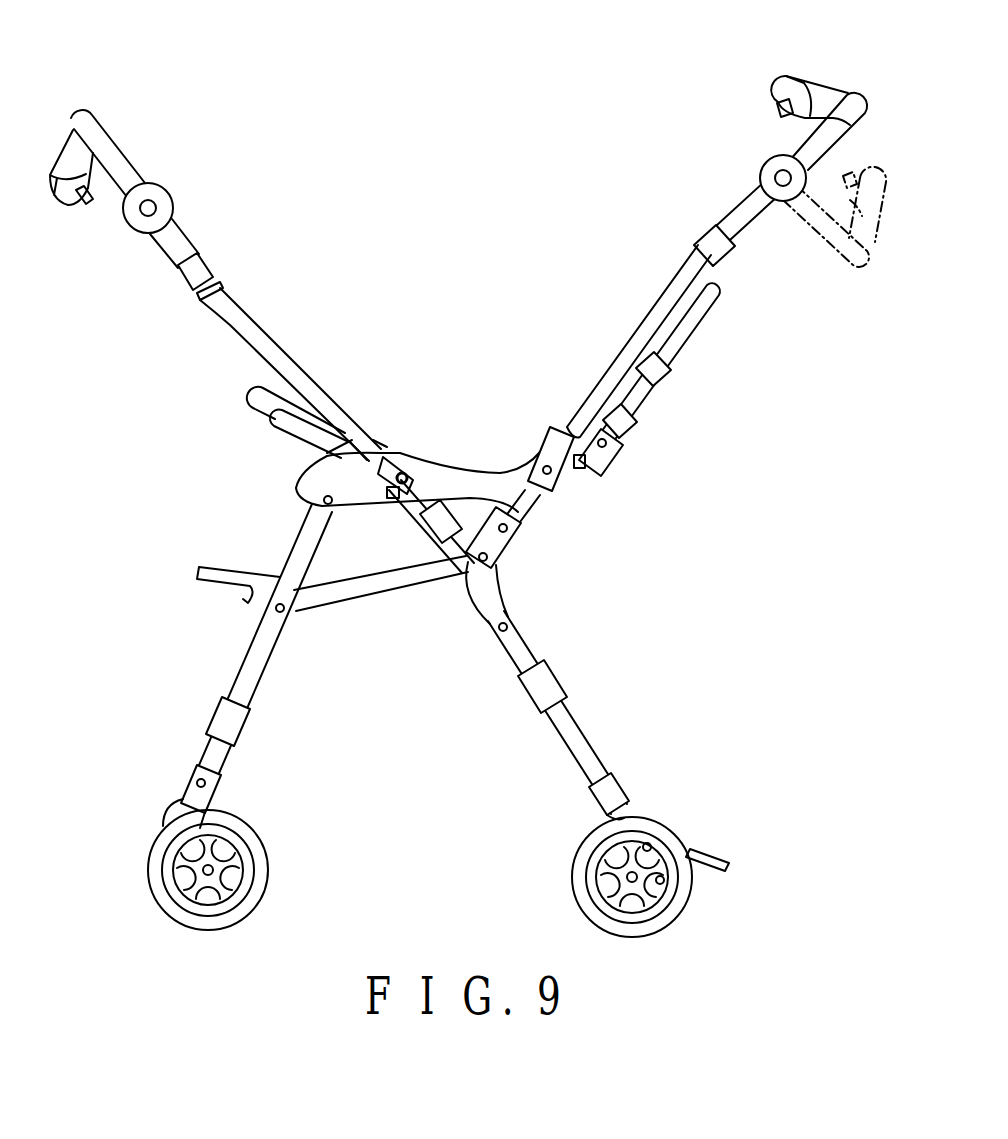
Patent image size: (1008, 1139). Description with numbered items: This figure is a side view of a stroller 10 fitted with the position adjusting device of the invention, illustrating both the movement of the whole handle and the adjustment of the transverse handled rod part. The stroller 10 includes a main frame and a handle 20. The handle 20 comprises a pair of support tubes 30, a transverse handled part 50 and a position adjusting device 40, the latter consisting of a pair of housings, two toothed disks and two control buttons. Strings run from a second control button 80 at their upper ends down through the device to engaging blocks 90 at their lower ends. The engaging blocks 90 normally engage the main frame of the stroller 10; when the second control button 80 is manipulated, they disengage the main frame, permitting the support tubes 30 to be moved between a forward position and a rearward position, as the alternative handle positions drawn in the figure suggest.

The stroller 10 is at (248, 493).
The handle 20 is at (716, 251).
The support tubes 30 is at (677, 283).
The position adjusting device 40 is at (766, 160).
The transverse handled part 50 is at (810, 80).
The second control button 80 is at (850, 123).
The engaging blocks 90 is at (518, 532).